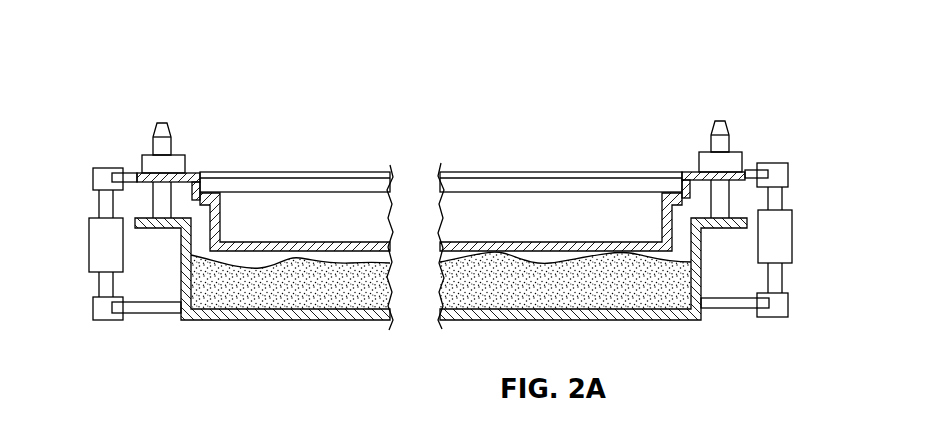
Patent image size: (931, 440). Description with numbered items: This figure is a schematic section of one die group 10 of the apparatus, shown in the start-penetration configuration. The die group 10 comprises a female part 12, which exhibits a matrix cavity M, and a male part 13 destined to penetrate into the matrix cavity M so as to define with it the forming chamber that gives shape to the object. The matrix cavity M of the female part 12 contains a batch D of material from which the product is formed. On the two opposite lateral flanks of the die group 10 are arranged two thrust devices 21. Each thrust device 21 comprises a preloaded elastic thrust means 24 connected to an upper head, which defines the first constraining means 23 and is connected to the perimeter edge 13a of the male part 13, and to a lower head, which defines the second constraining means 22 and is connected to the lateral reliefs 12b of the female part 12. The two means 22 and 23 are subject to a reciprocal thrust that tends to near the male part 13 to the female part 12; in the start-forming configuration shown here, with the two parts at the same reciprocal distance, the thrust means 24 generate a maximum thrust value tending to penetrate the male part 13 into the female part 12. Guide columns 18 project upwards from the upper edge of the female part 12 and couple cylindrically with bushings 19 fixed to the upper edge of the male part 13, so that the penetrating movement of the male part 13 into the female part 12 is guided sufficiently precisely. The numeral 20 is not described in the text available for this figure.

The die group 10 is at (297, 321).
The female part 12 is at (343, 313).
The lateral reliefs 12b is at (145, 313).
The male part 13 is at (327, 247).
The perimeter edge 13a is at (163, 173).
The guide columns 18 is at (172, 133).
The bushings 19 is at (142, 165).
The clamp arm 20 is at (86, 215).
The thrust device 21 is at (89, 235).
The second constraining means 22 is at (94, 313).
The first constraining means 23 is at (99, 167).
The preloaded elastic thrust means 24 is at (97, 322).
The matrix cavity M is at (196, 253).
The batch of material D is at (357, 280).